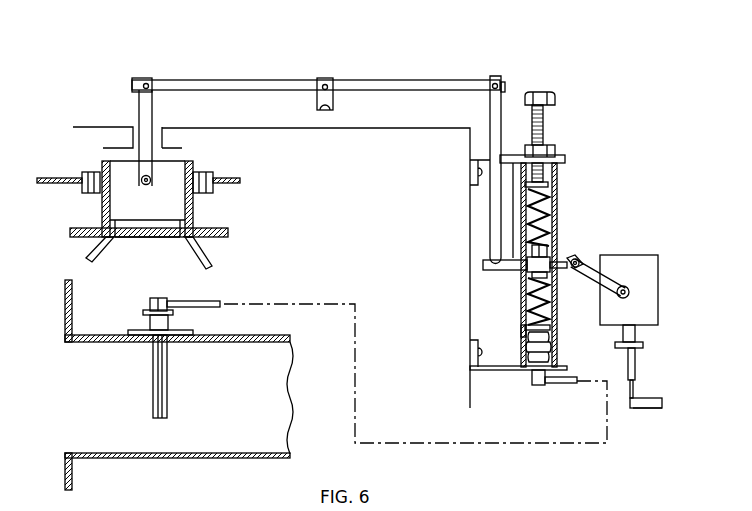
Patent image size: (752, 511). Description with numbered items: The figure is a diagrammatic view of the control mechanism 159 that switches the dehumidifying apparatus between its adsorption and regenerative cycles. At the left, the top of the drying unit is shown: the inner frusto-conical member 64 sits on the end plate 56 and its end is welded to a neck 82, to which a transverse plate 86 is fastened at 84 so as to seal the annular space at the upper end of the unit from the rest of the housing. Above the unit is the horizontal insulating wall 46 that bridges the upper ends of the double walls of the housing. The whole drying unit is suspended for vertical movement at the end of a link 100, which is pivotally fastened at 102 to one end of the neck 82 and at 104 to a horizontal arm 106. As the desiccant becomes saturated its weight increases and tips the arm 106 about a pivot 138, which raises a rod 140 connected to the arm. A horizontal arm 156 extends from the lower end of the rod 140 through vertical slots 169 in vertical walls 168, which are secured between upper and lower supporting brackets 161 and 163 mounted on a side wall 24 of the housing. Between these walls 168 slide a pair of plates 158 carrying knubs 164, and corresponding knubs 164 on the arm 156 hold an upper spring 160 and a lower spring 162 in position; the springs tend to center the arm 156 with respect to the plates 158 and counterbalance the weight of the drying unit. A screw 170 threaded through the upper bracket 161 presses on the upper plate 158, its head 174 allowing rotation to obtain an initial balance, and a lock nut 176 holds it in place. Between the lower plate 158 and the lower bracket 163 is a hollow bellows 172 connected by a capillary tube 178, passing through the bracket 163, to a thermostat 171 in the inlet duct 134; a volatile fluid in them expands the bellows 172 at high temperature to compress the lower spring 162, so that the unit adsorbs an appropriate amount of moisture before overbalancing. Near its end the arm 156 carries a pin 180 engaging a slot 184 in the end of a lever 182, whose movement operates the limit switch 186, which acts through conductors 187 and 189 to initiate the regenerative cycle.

The parallel wall 24 is at (470, 194).
The horizontal insulating wall 46 is at (374, 128).
The end plate 56 is at (212, 229).
The inner frusto-conical member 64 is at (188, 250).
The neck 82 is at (193, 163).
The fastening 84 is at (241, 174).
The transverse plate 86 is at (72, 178).
The link 100 is at (153, 108).
The pivot 102 is at (142, 186).
The pivot 104 is at (147, 78).
The horizontal arm 106 is at (413, 80).
The inlet duct 134 is at (80, 336).
The pivot 138 is at (326, 78).
The rod 140 is at (490, 109).
The horizontal arm 156 is at (483, 264).
The plate 158 is at (549, 185).
The control mechanism 159 is at (574, 200).
The upper spring 160 is at (527, 216).
The upper supporting bracket 161 is at (566, 160).
The lower spring 162 is at (543, 299).
The lower supporting bracket 163 is at (480, 371).
The knub 164 is at (558, 228).
The vertical wall 168 is at (522, 332).
The vertical slot 169 is at (526, 280).
The screw 170 is at (544, 114).
The thermostat 171 is at (148, 327).
The bellows 172 is at (556, 350).
The head 174 is at (545, 93).
The lock nut 176 is at (556, 149).
The capillary tube 178 is at (533, 443).
The pin 180 is at (578, 259).
The lever 182 is at (592, 284).
The slot 184 is at (623, 262).
The limit switch 186 is at (618, 260).
The conductor 187 is at (647, 397).
The conductor 189 is at (648, 408).